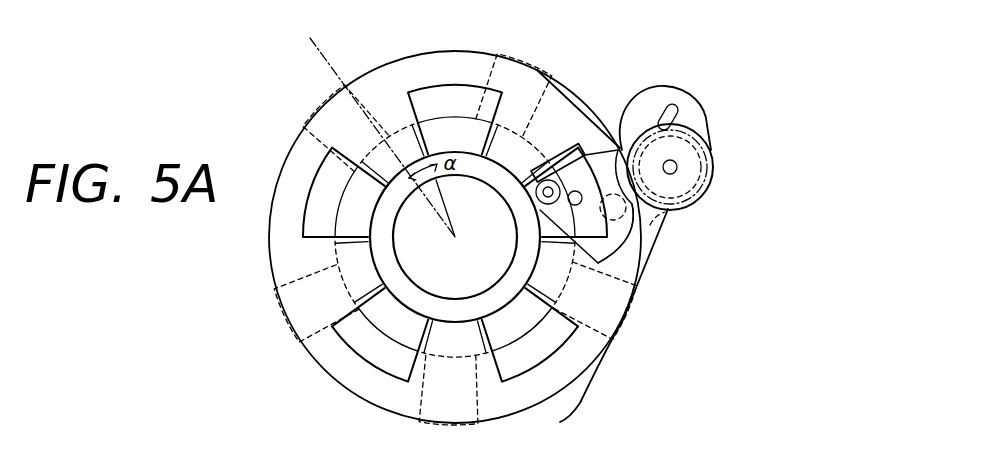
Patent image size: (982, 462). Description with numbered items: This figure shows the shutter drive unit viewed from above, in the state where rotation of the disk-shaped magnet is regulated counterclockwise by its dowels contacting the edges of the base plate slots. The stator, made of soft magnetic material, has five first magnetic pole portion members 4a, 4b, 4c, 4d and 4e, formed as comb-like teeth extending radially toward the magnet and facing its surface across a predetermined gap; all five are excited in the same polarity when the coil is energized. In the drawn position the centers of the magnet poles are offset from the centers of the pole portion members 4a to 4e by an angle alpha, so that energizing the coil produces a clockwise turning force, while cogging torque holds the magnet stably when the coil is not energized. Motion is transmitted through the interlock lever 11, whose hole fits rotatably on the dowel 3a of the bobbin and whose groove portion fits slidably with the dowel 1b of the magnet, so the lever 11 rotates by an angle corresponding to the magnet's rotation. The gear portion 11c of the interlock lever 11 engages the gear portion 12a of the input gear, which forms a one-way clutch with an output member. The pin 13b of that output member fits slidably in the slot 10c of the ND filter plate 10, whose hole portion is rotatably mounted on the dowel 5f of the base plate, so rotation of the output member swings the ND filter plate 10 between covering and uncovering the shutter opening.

The dowel 1b is at (520, 85).
The dowel 3a is at (572, 140).
The first magnetic pole portion member 4a is at (300, 128).
The first magnetic pole portion member 4b is at (292, 327).
The first magnetic pole portion member 4c is at (440, 420).
The first magnetic pole portion member 4d is at (615, 322).
The first magnetic pole portion member 4e is at (462, 75).
The dowel 5f is at (650, 225).
The ND filter plate 10 is at (565, 404).
The slot 10c is at (670, 92).
The interlock lever 11 is at (577, 190).
The gear portion 11c is at (625, 242).
The gear portion 12a is at (714, 167).
The pin 13b is at (614, 194).